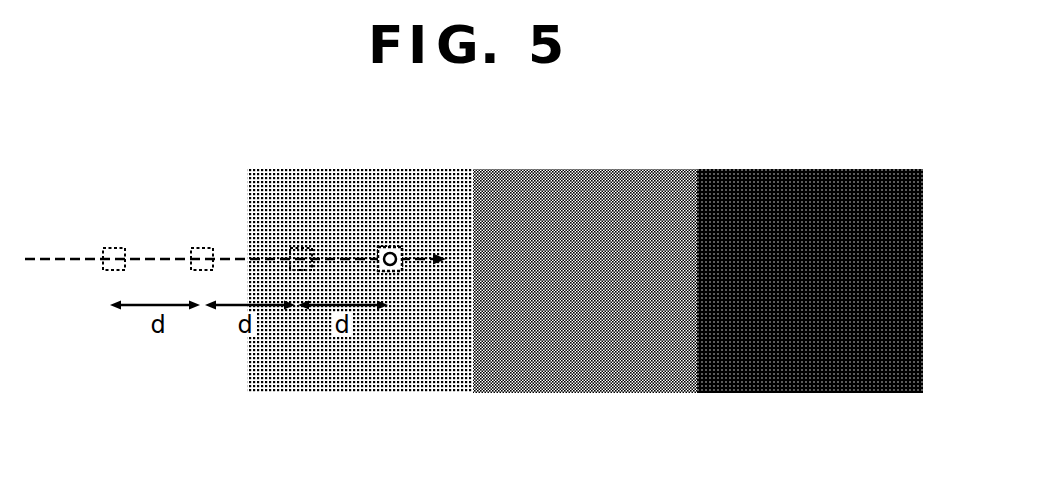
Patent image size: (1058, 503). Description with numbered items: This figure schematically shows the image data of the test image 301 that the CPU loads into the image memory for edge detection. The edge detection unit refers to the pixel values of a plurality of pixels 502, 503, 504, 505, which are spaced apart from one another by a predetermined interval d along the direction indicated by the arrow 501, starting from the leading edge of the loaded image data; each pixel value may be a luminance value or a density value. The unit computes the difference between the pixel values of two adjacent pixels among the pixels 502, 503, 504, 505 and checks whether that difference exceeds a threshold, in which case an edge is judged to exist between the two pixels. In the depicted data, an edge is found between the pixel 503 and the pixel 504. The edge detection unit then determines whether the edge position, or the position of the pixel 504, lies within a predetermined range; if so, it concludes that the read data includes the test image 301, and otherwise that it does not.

The test image 301 is at (657, 169).
The arrow 501 is at (420, 256).
The pixel 502 is at (115, 248).
The pixel 503 is at (203, 248).
The pixel 504 is at (301, 247).
The pixel 505 is at (391, 247).